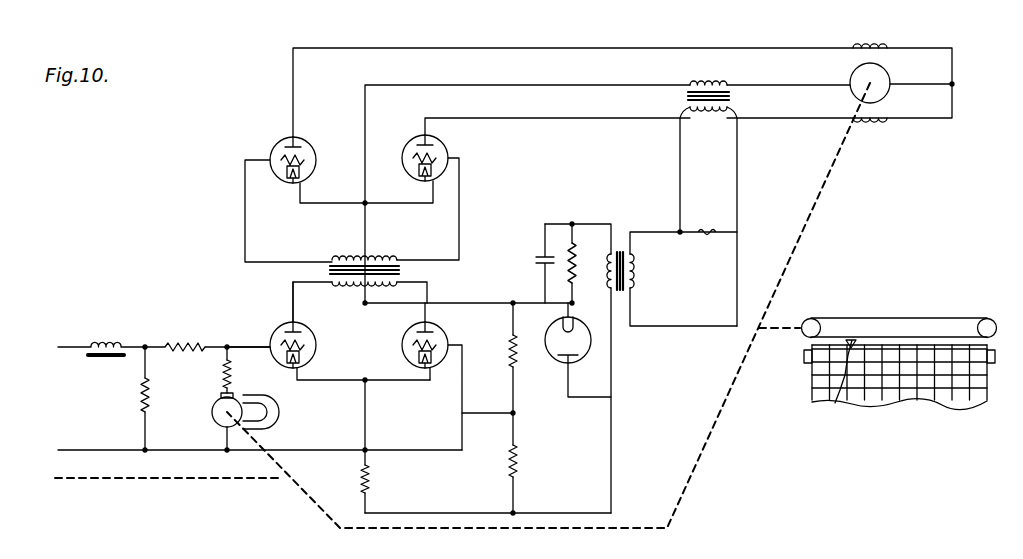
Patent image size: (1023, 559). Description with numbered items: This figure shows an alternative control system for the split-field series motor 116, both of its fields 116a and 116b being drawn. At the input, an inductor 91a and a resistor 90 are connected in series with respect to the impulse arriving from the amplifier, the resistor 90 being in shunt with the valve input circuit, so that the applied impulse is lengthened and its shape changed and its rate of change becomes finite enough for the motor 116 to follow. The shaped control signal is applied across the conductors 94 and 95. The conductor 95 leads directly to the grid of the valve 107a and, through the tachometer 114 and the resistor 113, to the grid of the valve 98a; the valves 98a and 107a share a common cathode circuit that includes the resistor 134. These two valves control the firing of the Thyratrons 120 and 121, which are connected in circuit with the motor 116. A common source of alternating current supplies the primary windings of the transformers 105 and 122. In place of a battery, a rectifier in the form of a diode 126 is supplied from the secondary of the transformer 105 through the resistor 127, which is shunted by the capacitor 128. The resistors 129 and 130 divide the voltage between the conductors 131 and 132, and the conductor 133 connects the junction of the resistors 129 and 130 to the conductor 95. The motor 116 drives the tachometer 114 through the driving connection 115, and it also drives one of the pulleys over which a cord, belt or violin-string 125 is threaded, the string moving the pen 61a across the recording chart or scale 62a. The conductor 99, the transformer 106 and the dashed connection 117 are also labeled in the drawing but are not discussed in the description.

The pen 61a is at (852, 344).
The recording chart or scale 62a is at (840, 408).
The resistor 90 is at (140, 388).
The inductor 91a is at (106, 344).
The conductor 94 is at (160, 340).
The conductor 95 is at (412, 448).
The valve 98a is at (316, 354).
The conductor 99 is at (198, 348).
The transformer 105 is at (620, 240).
The transformer 106 is at (410, 276).
The valve 107a is at (404, 338).
The resistor 113 is at (220, 374).
The tachometer 114 is at (210, 412).
The driving connection 115 is at (474, 535).
The split-field series motor 116 is at (850, 78).
The field 116a is at (856, 30).
The field 116b is at (870, 122).
The control connection 117 is at (86, 484).
The Thyratron 120 is at (272, 150).
The Thyratron 121 is at (445, 152).
The transformer 122 is at (686, 101).
The cord, belt or violin-string 125 is at (936, 314).
The diode 126 is at (579, 359).
The resistor 127 is at (578, 280).
The capacitor 128 is at (534, 262).
The resistor 129 is at (518, 364).
The resistor 130 is at (522, 459).
The conductor 131 is at (456, 305).
The conductor 132 is at (478, 513).
The conductor 133 is at (508, 416).
The resistor 134 is at (370, 477).